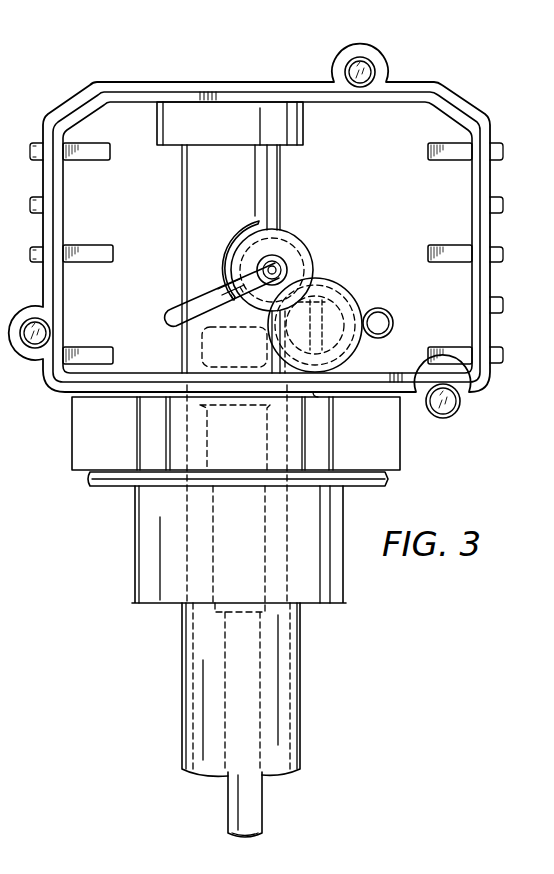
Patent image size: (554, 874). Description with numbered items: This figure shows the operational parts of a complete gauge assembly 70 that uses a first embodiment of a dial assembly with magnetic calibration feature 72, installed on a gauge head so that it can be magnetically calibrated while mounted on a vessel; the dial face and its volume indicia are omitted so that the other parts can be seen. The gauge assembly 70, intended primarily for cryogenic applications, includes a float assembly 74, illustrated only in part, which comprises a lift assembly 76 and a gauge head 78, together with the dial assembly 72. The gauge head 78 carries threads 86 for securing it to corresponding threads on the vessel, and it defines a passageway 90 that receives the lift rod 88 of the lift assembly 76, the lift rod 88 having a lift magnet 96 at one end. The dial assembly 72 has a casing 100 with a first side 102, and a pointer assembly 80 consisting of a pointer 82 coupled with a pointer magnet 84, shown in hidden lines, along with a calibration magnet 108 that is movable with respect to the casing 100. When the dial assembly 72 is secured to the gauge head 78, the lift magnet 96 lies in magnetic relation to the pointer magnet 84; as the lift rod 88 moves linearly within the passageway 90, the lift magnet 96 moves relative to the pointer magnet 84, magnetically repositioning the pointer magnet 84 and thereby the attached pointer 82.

The gauge assembly 70 is at (236, 54).
The dial assembly with magnetic calibration feature 72 is at (144, 78).
The float assembly 74 is at (180, 696).
The lift assembly 76 is at (192, 406).
The gauge head 78 is at (400, 448).
The pointer assembly 80 is at (232, 217).
The pointer 82 is at (165, 306).
The pointer magnet 84 is at (288, 244).
The threads 86 is at (92, 478).
The lift rod 88 is at (228, 806).
The passageway 90 is at (200, 558).
The lift magnet 96 is at (200, 349).
The casing 100 is at (469, 98).
The first side 102 is at (378, 152).
The calibration magnet 108 is at (348, 294).